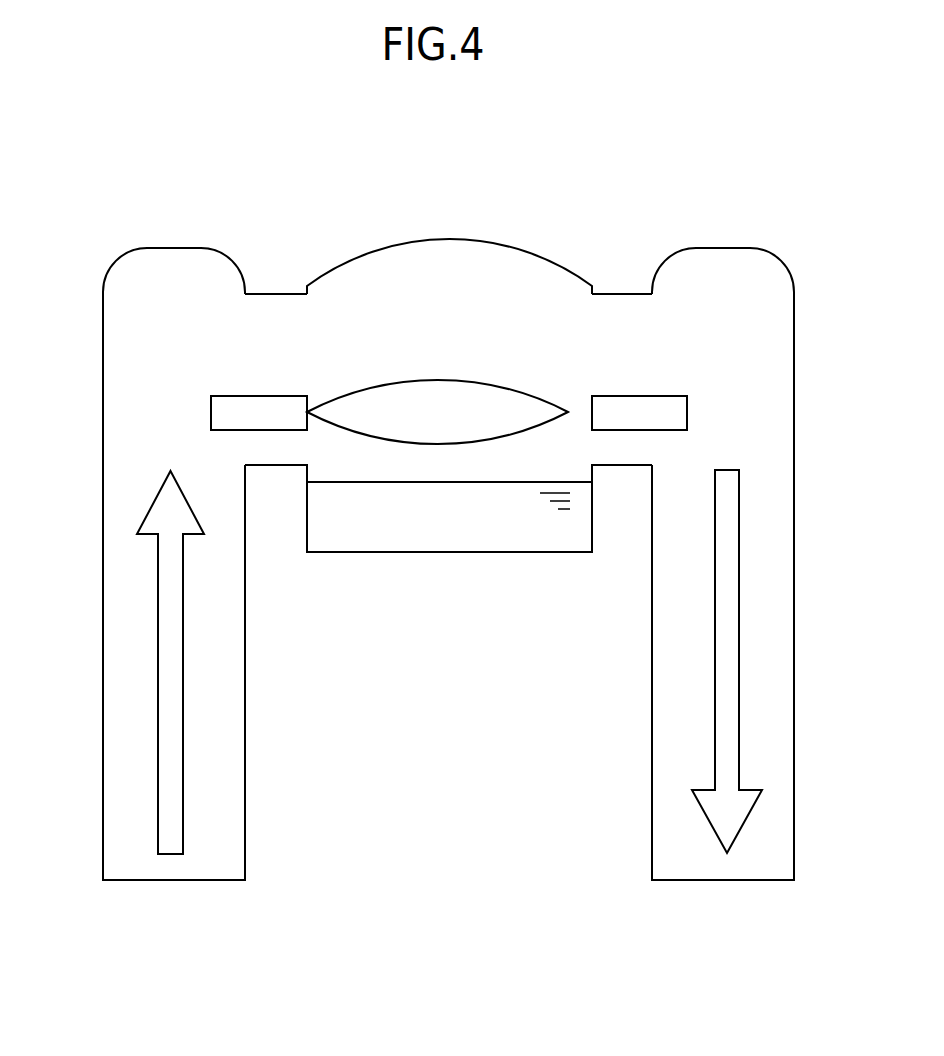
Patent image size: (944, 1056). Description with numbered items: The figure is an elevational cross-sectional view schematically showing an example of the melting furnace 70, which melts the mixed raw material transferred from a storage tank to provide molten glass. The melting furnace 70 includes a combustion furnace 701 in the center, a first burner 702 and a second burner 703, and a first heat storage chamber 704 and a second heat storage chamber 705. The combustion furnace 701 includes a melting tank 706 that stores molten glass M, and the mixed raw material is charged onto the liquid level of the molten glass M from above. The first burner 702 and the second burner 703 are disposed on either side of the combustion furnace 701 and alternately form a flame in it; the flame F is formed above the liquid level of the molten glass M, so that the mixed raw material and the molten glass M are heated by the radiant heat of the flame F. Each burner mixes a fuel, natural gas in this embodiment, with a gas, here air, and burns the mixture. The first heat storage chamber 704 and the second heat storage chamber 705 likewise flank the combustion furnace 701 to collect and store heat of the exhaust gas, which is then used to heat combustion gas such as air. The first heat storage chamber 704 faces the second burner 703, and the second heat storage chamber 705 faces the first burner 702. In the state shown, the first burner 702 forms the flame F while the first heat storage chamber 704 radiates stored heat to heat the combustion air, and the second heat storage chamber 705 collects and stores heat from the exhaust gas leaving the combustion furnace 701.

The melting furnace 70 is at (115, 183).
The combustion furnace 701 is at (447, 237).
The first burner 702 is at (247, 394).
The second burner 703 is at (638, 394).
The first heat storage chamber 704 is at (103, 626).
The second heat storage chamber 705 is at (794, 617).
The melting tank 706 is at (550, 553).
The flame F is at (428, 380).
The molten glass M is at (444, 535).